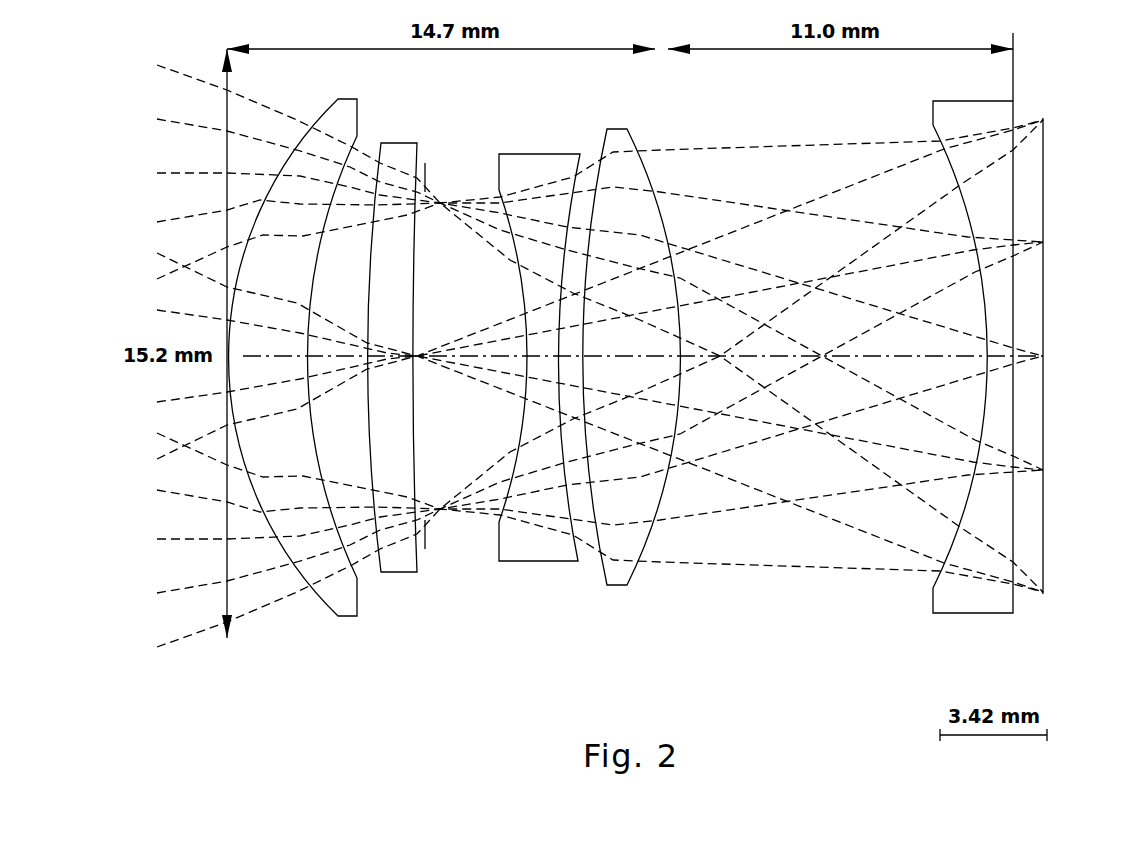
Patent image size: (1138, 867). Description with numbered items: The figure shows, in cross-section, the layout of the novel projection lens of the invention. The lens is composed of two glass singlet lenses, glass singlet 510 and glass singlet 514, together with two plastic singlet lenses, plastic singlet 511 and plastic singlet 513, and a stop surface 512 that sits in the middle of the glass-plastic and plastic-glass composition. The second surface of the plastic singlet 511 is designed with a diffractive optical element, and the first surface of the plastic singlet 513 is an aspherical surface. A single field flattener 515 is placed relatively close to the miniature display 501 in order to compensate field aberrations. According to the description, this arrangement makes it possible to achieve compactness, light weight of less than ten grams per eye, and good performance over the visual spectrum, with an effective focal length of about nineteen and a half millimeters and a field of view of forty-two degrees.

The miniature display 501 is at (1090, 356).
The glass singlet lens 510 is at (293, 399).
The plastic singlet lens 511 is at (426, 403).
The stop surface 512 is at (476, 388).
The plastic singlet lens 513 is at (519, 326).
The glass singlet lens 514 is at (643, 389).
The single field flattener 515 is at (920, 380).